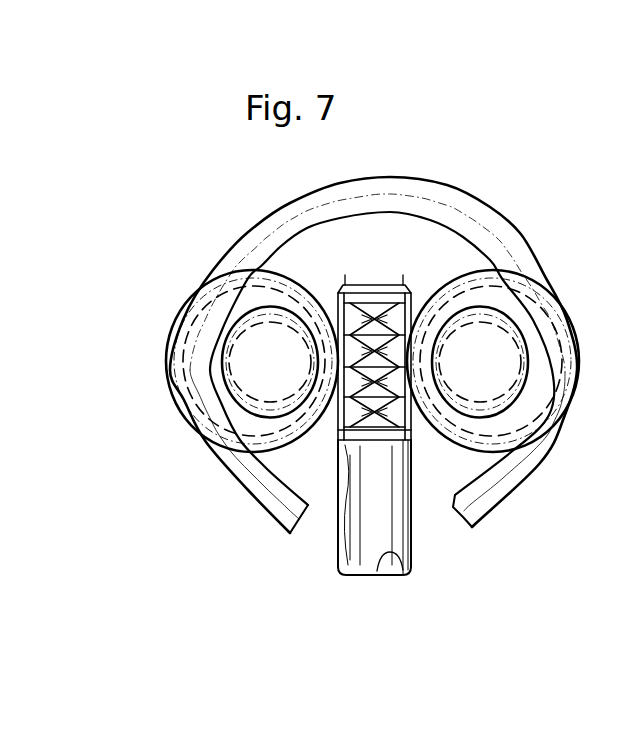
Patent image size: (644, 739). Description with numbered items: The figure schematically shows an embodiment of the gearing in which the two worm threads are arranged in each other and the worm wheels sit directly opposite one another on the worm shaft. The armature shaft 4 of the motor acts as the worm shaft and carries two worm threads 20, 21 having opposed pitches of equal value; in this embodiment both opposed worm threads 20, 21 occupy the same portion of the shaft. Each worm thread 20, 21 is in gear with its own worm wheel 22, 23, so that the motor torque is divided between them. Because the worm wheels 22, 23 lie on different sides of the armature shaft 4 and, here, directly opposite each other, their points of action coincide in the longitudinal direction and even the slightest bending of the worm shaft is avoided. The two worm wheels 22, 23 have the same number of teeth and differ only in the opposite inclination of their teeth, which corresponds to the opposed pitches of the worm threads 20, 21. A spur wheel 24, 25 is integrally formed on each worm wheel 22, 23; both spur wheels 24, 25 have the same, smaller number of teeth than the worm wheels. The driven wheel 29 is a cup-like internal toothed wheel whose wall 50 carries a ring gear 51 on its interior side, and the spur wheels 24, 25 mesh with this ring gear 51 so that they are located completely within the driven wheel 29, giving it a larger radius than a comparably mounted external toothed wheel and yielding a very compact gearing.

The armature shaft 4 is at (410, 552).
The worm thread 20 is at (413, 490).
The worm thread 21 is at (340, 531).
The worm wheel 22 is at (497, 425).
The worm wheel 23 is at (256, 430).
The spur wheel 24 is at (520, 370).
The spur wheel 25 is at (236, 366).
The driven wheel 29 is at (497, 212).
The wall 50 is at (462, 203).
The ring gear 51 is at (402, 203).